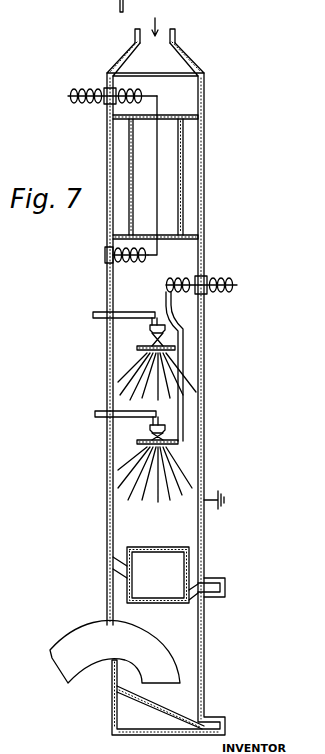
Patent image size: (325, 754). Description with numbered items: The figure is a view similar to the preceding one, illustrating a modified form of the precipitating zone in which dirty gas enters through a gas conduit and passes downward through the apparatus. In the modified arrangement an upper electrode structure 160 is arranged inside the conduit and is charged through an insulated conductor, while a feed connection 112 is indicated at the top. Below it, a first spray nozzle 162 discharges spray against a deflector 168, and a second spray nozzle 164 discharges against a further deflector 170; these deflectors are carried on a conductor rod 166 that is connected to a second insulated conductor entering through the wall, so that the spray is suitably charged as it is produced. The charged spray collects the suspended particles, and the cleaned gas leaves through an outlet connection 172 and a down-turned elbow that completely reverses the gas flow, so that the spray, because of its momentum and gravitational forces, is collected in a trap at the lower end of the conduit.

The inner cylinder electrode 160 is at (168, 187).
The upper spray pipe nozzle 162 is at (166, 334).
The lower spray pipe nozzle 164 is at (166, 430).
The conductor rod 166 is at (198, 473).
The upper deflector plate 168 is at (176, 348).
The lower deflector plate 170 is at (181, 444).
The inlet pipe to chamber 172 is at (120, 558).
The feed conduit (fragment) 112 is at (150, 0).